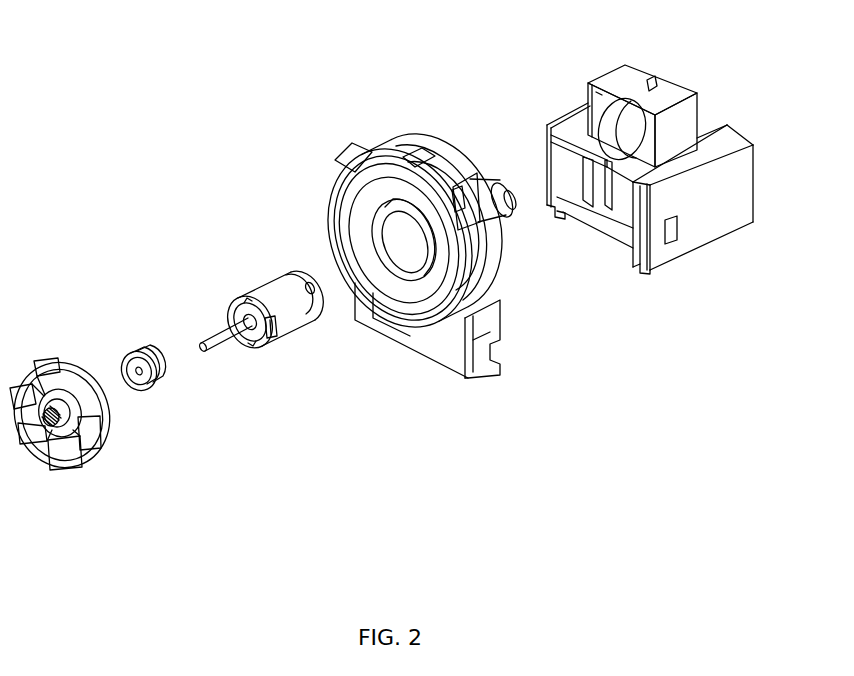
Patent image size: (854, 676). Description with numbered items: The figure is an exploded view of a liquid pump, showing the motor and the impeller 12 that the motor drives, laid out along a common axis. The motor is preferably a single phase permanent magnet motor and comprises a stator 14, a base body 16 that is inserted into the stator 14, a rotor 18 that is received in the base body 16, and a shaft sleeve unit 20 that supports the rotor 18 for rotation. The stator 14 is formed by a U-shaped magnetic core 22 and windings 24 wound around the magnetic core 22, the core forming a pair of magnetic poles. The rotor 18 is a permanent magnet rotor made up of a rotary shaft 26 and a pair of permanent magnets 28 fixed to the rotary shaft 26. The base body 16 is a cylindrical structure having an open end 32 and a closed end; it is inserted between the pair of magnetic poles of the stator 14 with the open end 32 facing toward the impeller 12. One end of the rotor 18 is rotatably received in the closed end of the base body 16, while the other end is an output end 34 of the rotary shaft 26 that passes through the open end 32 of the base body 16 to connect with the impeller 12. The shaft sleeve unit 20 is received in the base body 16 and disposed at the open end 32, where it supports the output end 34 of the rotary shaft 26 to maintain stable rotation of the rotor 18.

The impeller 12 is at (66, 448).
The stator 14 is at (669, 180).
The base body 16 is at (410, 251).
The rotor 18 is at (258, 320).
The shaft sleeve unit 20 is at (138, 353).
The magnetic core 22 is at (661, 103).
The windings 24 is at (639, 222).
The rotary shaft 26 is at (231, 335).
The permanent magnets 28 is at (274, 333).
The open end 32 is at (416, 258).
The output end 34 is at (200, 353).